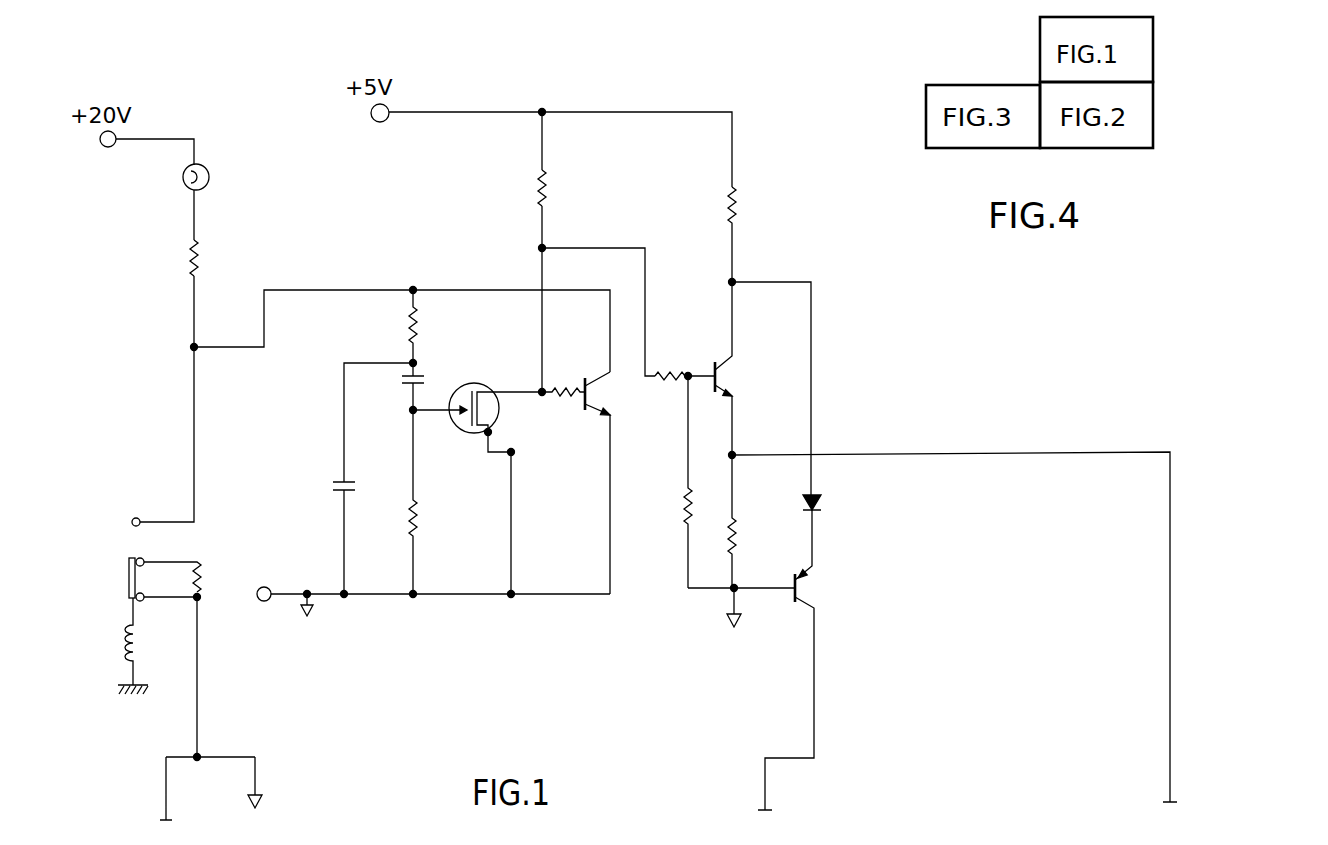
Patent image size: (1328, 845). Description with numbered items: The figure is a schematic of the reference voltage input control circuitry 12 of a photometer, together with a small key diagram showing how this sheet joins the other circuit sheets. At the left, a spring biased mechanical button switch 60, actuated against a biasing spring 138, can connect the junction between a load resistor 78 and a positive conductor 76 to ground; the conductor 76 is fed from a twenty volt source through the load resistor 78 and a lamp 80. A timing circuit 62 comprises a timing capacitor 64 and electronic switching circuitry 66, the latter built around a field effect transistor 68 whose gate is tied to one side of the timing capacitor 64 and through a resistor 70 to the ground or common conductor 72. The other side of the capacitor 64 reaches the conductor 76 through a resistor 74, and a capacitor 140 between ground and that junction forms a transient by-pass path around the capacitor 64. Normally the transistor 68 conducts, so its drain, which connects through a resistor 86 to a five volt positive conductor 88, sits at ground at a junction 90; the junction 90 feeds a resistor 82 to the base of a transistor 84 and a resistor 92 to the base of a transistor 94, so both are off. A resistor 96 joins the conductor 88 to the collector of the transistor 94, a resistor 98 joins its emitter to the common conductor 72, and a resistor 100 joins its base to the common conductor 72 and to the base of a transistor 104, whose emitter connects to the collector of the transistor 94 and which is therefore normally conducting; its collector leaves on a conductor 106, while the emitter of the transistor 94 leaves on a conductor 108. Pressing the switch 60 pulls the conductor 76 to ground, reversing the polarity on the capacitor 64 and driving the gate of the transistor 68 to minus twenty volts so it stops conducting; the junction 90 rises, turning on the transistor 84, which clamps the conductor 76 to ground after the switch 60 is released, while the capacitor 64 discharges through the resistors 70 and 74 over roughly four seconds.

The control circuitry 12 is at (838, 404).
The button switch 60 is at (130, 580).
The timing circuit 62 is at (413, 608).
The timing capacitor 64 is at (420, 378).
The electronic switching circuitry 66 is at (601, 608).
The field effect transistor 68 is at (465, 432).
The resistor 70 is at (418, 525).
The common conductor 72 is at (258, 800).
The resistor 74 is at (410, 330).
The positive conductor 76 is at (192, 348).
The load resistor 78 is at (185, 262).
The lamp 80 is at (210, 180).
The resistor 82 is at (563, 400).
The transistor 84 is at (618, 400).
The resistor 86 is at (547, 186).
The positive voltage conductor 88 is at (508, 110).
The junction 90 is at (540, 248).
The resistor 92 is at (675, 373).
The transistor 94 is at (718, 378).
The resistor 96 is at (738, 201).
The resistor 98 is at (740, 545).
The resistor 100 is at (688, 505).
The transistor 104 is at (798, 588).
The conductor 106 is at (818, 707).
The conductor 108 is at (1173, 637).
The biasing spring 138 is at (120, 648).
The capacitor 140 is at (334, 485).